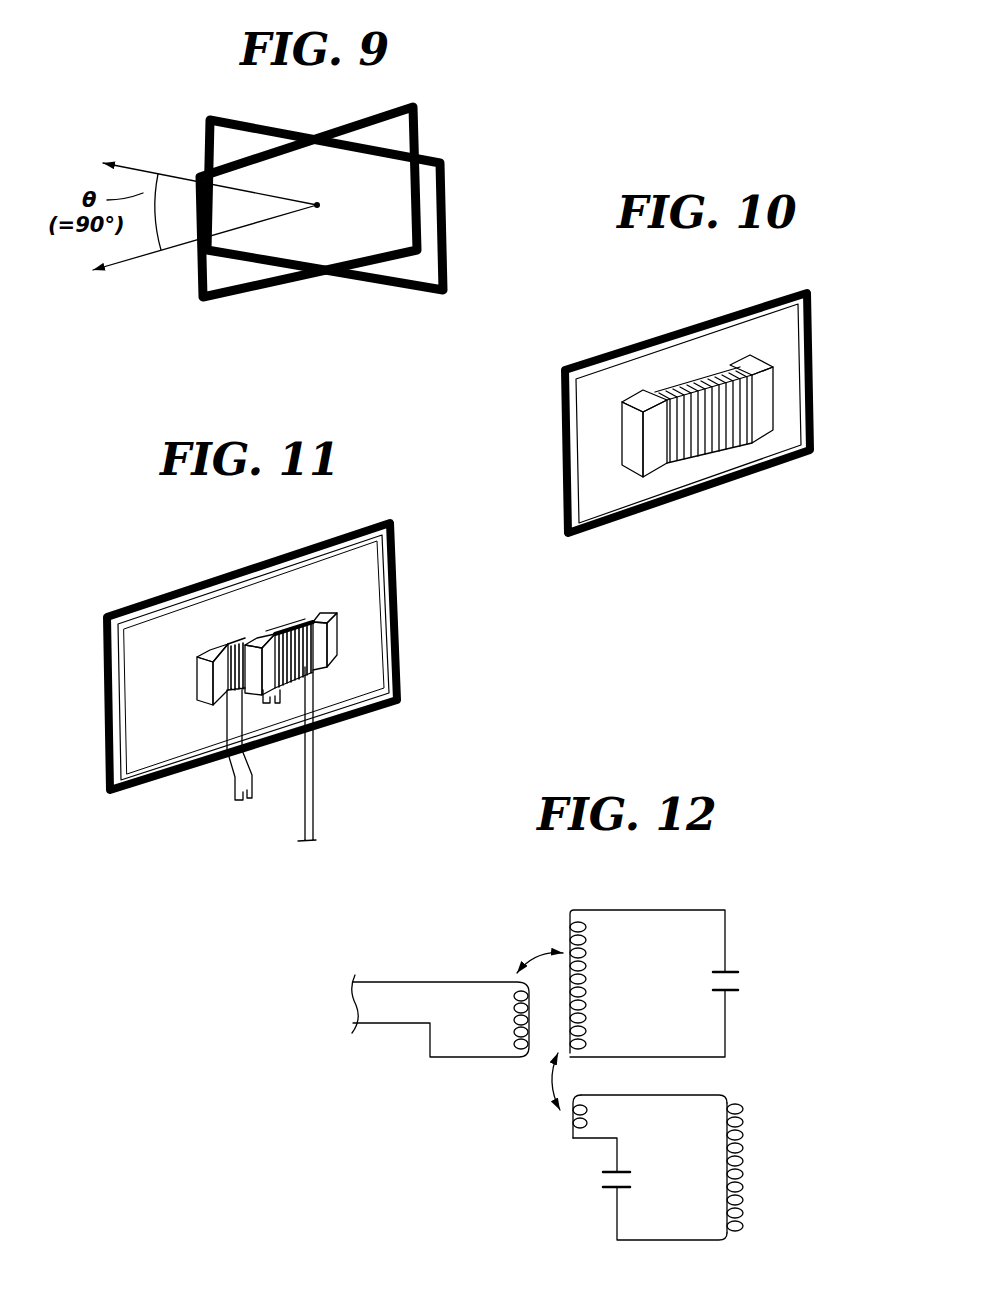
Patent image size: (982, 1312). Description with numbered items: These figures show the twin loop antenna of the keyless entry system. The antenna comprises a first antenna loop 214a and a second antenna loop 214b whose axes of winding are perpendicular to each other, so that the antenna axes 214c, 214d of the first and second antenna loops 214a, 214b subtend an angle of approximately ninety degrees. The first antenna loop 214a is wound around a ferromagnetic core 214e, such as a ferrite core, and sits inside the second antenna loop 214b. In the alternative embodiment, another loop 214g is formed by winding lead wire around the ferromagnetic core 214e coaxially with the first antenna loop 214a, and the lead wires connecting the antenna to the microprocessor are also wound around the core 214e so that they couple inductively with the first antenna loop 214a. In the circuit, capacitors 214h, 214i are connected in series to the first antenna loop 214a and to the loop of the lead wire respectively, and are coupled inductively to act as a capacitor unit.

In FIG. 9, the first antenna loop 214a is at (423, 120).
In FIG. 10, the first antenna loop 214a is at (705, 443).
In FIG. 11, the first antenna loop 214a is at (253, 702).
In FIG. 12, the first antenna loop 214a is at (737, 1155).
In FIG. 9, the second antenna loop 214b is at (450, 250).
In FIG. 10, the second antenna loop 214b is at (833, 277).
In FIG. 11, the second antenna loop 214b is at (223, 567).
In FIG. 12, the second antenna loop 214b is at (570, 920).
In FIG. 9, the antenna axis 214c is at (182, 171).
In FIG. 9, the antenna axis 214d is at (180, 250).
In FIG. 10, the ferromagnetic core 214e is at (633, 448).
In FIG. 12, the ferromagnetic core 214e is at (570, 1117).
In FIG. 11, the loop 214g is at (213, 642).
In FIG. 12, the capacitor 214h is at (733, 972).
In FIG. 12, the capacitor 214i is at (603, 1183).